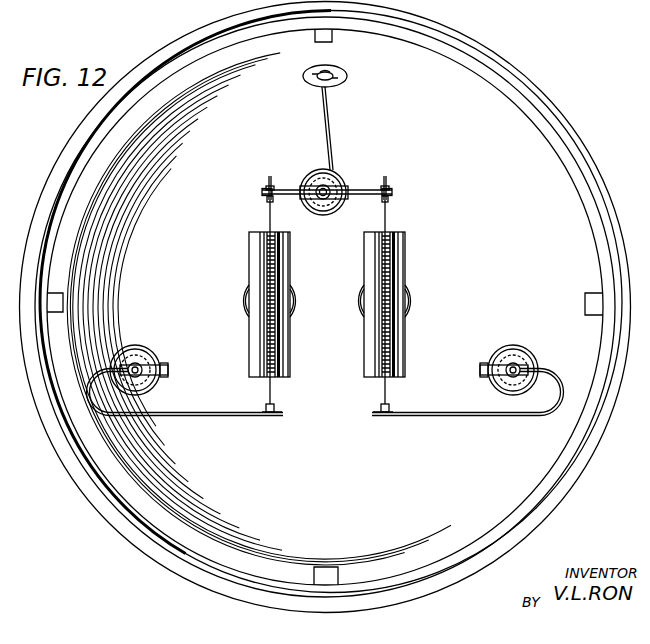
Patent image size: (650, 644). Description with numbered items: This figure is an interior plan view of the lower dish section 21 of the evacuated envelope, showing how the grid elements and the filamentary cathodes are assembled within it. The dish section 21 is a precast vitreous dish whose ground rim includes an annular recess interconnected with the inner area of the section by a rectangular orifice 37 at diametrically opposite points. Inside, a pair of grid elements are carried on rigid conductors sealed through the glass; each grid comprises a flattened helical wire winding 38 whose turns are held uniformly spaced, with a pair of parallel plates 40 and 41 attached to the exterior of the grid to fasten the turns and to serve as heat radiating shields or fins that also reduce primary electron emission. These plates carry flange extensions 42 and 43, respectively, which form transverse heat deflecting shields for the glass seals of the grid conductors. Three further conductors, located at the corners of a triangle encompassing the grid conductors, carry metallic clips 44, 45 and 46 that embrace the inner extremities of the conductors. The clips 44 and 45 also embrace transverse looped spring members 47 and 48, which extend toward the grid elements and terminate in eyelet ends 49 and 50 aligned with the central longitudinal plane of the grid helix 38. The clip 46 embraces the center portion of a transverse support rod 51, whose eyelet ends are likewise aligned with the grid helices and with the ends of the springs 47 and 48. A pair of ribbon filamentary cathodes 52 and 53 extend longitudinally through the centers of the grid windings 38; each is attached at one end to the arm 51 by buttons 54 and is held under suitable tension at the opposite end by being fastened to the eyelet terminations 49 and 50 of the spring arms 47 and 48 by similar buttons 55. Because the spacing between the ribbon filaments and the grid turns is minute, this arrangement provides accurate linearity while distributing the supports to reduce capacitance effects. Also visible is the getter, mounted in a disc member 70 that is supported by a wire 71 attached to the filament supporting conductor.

The dish section 21 is at (517, 69).
The rectangular orifice 37 is at (331, 32).
The helical wire winding 38 is at (268, 340).
The parallel plate 40 is at (262, 275).
The parallel plate 41 is at (278, 253).
The flange extension 42 is at (253, 258).
The flange extension 43 is at (284, 277).
The metallic clip 44 is at (156, 366).
The metallic clip 45 is at (503, 364).
The metallic clip 46 is at (309, 182).
The looped spring member 47 is at (191, 415).
The looped spring member 48 is at (488, 416).
The eyelet end 49 is at (282, 416).
The eyelet end 50 is at (380, 414).
The transverse support rod 51 is at (359, 190).
The ribbon filamentary cathode 52 is at (268, 215).
The ribbon filamentary cathode 53 is at (388, 217).
The button 54 is at (271, 186).
The button 55 is at (269, 416).
The disc member 70 is at (347, 78).
The wire 71 is at (333, 139).